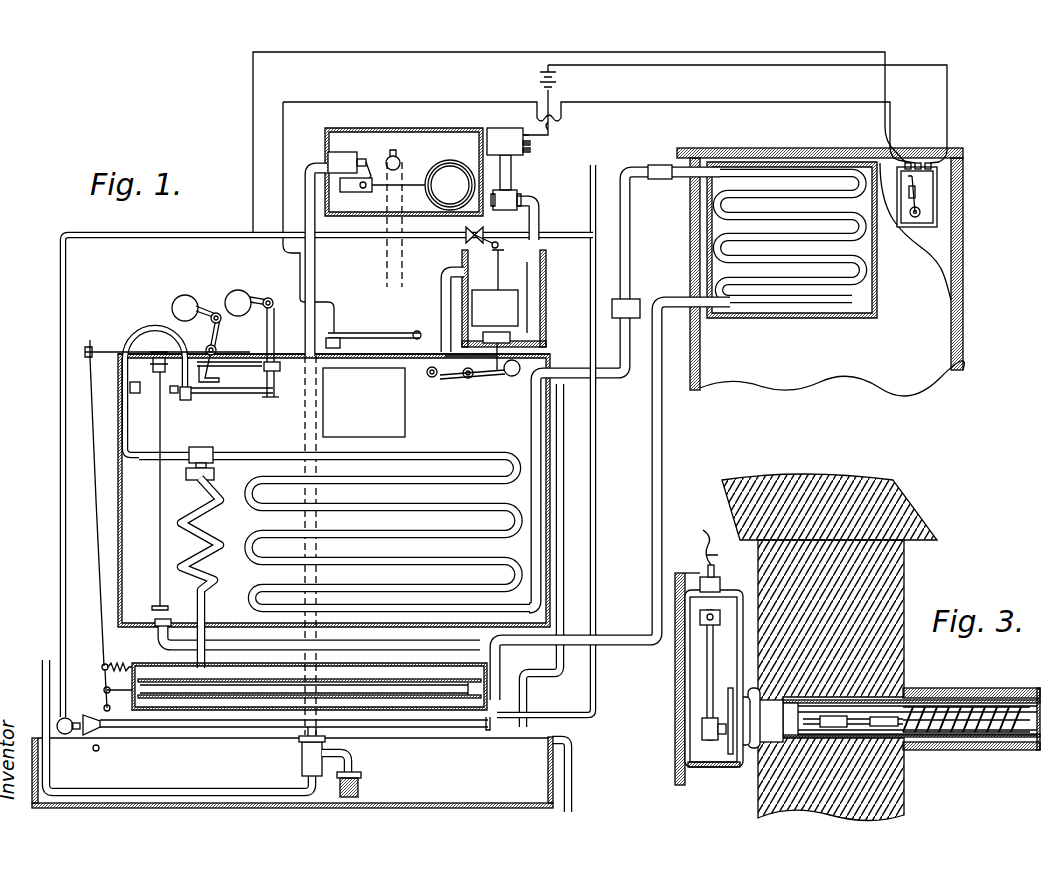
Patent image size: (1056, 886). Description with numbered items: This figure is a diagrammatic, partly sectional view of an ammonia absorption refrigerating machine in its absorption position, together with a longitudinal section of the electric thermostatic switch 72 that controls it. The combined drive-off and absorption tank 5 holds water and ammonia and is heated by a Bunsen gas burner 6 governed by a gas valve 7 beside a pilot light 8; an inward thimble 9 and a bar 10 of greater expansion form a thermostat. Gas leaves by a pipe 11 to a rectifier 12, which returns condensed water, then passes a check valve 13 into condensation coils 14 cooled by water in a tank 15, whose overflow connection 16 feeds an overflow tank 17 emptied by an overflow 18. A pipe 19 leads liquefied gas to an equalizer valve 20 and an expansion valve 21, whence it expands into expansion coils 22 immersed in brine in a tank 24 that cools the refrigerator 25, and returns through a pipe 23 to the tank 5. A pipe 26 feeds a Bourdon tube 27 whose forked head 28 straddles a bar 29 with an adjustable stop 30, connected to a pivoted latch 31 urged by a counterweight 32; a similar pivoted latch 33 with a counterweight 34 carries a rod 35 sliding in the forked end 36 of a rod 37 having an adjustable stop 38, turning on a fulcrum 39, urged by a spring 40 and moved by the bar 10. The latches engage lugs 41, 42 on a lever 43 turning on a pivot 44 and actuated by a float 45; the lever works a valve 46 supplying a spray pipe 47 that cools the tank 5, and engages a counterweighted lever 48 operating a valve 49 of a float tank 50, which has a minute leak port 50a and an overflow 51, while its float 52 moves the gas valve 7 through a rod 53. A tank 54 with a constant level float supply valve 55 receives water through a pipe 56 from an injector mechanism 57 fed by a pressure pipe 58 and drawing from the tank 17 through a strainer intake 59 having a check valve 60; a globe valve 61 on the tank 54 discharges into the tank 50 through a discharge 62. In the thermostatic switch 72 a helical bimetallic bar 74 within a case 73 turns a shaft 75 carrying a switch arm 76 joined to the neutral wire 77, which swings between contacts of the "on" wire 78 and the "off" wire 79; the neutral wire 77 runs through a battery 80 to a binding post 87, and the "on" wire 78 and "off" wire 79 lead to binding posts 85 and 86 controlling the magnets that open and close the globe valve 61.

In FIG. 1, the combined drive-off and absorption tank 5 is at (503, 664).
In FIG. 1, the Bunsen gas burner 6 is at (236, 728).
In FIG. 1, the gas valve 7 is at (466, 234).
In FIG. 1, the pilot light 8 is at (505, 720).
In FIG. 1, the thimble 9 is at (346, 684).
In FIG. 1, the bar 10 is at (393, 689).
In FIG. 1, the pipe 11 is at (206, 618).
In FIG. 1, the rectifier 12 is at (212, 574).
In FIG. 1, the check valve 13 is at (214, 470).
In FIG. 1, the condensation coils 14 is at (392, 478).
In FIG. 1, the tank 15 is at (120, 488).
In FIG. 1, the overflow connection 16 is at (570, 428).
In FIG. 1, the overflow tank 17 is at (420, 800).
In FIG. 1, the overflow 18 is at (568, 760).
In FIG. 1, the pipe 19 is at (540, 540).
In FIG. 1, the equalizer valve 20 is at (626, 306).
In FIG. 1, the expansion valve 21 is at (652, 168).
In FIG. 1, the expansion coils 22 is at (852, 228).
In FIG. 1, the pipe 23 is at (660, 472).
In FIG. 1, the brine tank 24 is at (878, 296).
In FIG. 1, the refrigerator 25 is at (963, 322).
In FIG. 1, the pipe 26 is at (170, 454).
In FIG. 1, the Bourdon tube 27 is at (160, 328).
In FIG. 1, the forked head 28 is at (192, 392).
In FIG. 1, the bar 29 is at (236, 392).
In FIG. 1, the adjustable stop 30 is at (173, 395).
In FIG. 1, the pivoted latch 31 is at (274, 350).
In FIG. 1, the counterweight 32 is at (240, 300).
In FIG. 1, the pivoted latch 33 is at (215, 348).
In FIG. 1, the counterweight 34 is at (186, 305).
In FIG. 1, the rod 35 is at (108, 350).
In FIG. 1, the forked end 36 is at (92, 340).
In FIG. 1, the rod 37 is at (95, 488).
In FIG. 1, the adjustable stop 38 is at (92, 368).
In FIG. 1, the fulcrum 39 is at (104, 700).
In FIG. 1, the spring 40 is at (118, 664).
In FIG. 1, the lug 41 is at (276, 364).
In FIG. 1, the lug 42 is at (220, 365).
In FIG. 1, the lever 43 is at (280, 384).
In FIG. 1, the pivot 44 is at (432, 377).
In FIG. 1, the float 45 is at (382, 407).
In FIG. 1, the valve 46 is at (160, 605).
In FIG. 1, the spray pipe 47 is at (362, 646).
In FIG. 1, the counterweighted lever 48 is at (505, 374).
In FIG. 1, the valve 49 is at (520, 338).
In FIG. 1, the float tank 50 is at (546, 280).
In FIG. 1, the leak port 50a is at (456, 351).
In FIG. 1, the overflow 51 is at (445, 300).
In FIG. 1, the float 52 is at (478, 296).
In FIG. 1, the rod 53 is at (499, 272).
In FIG. 1, the tank 54 is at (404, 142).
In FIG. 1, the constant level float supply valve 55 is at (345, 156).
In FIG. 1, the pipe 56 is at (305, 268).
In FIG. 1, the injector mechanism 57 is at (330, 748).
In FIG. 1, the pipe 58 is at (185, 790).
In FIG. 1, the strainer intake 59 is at (364, 784).
In FIG. 1, the check valve 60 is at (355, 772).
In FIG. 1, the globe valve 61 is at (521, 196).
In FIG. 1, the discharge 62 is at (540, 238).
In FIG. 1, the electric thermostatic switch 72 is at (937, 218).
In FIG. 3, the electric thermostatic switch 72 is at (709, 679).
In FIG. 3, the case 73 is at (930, 700).
In FIG. 3, the helical bimetallic bar 74 is at (990, 702).
In FIG. 3, the shaft 75 is at (914, 750).
In FIG. 1, the switch arm 76 is at (920, 192).
In FIG. 3, the switch arm 76 is at (710, 668).
In FIG. 1, the neutral wire 77 is at (732, 65).
In FIG. 1, the "on" wire 78 is at (710, 102).
In FIG. 1, the "off" wire 79 is at (253, 155).
In FIG. 1, the battery 80 is at (556, 86).
In FIG. 1, the binding post 85 is at (529, 135).
In FIG. 1, the binding post 86 is at (530, 143).
In FIG. 1, the binding post 87 is at (530, 151).